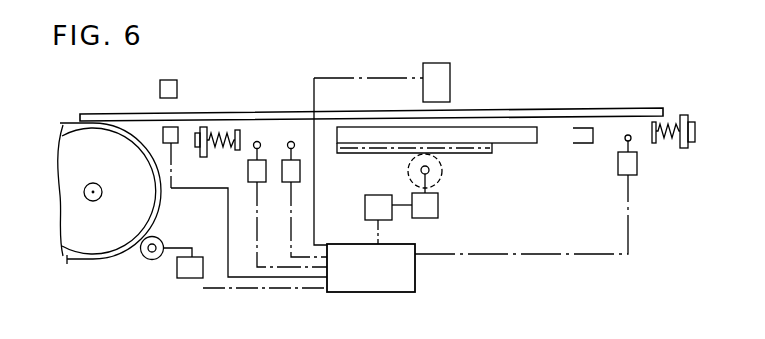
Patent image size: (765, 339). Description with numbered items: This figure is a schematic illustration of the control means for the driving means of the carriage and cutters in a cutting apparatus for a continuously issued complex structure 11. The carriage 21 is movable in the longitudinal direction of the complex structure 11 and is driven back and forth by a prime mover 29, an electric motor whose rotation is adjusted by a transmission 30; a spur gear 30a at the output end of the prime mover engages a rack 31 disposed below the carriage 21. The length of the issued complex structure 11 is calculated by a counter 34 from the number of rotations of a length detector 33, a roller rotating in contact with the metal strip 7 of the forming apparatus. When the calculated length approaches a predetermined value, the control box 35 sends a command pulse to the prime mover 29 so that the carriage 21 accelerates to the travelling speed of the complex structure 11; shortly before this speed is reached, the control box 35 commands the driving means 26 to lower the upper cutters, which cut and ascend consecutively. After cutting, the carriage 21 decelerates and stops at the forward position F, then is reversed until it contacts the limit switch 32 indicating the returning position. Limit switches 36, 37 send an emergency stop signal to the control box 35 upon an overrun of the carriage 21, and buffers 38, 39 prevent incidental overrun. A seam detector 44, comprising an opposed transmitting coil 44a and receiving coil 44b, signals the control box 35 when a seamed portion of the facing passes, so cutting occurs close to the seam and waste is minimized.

The metal strip 7 is at (80, 262).
The complex structure 11 is at (585, 107).
The carriage 21 is at (517, 143).
The driving means 26 is at (450, 73).
The prime mover 29 is at (365, 208).
The transmission 30 is at (438, 215).
The spur gear 30a is at (441, 168).
The rack 31 is at (478, 156).
The limit switch 32 is at (357, 147).
The length detector 33 is at (148, 261).
The counter 34 is at (185, 279).
The control box 35 is at (415, 282).
The limit switch 36 is at (637, 170).
The limit switch 37 is at (300, 150).
The buffer 38 is at (655, 143).
The buffer 39 is at (240, 130).
The seam detector 44 is at (177, 77).
The transmitting coil 44a is at (160, 88).
The receiving coil 44b is at (178, 128).
The forward position F is at (503, 162).